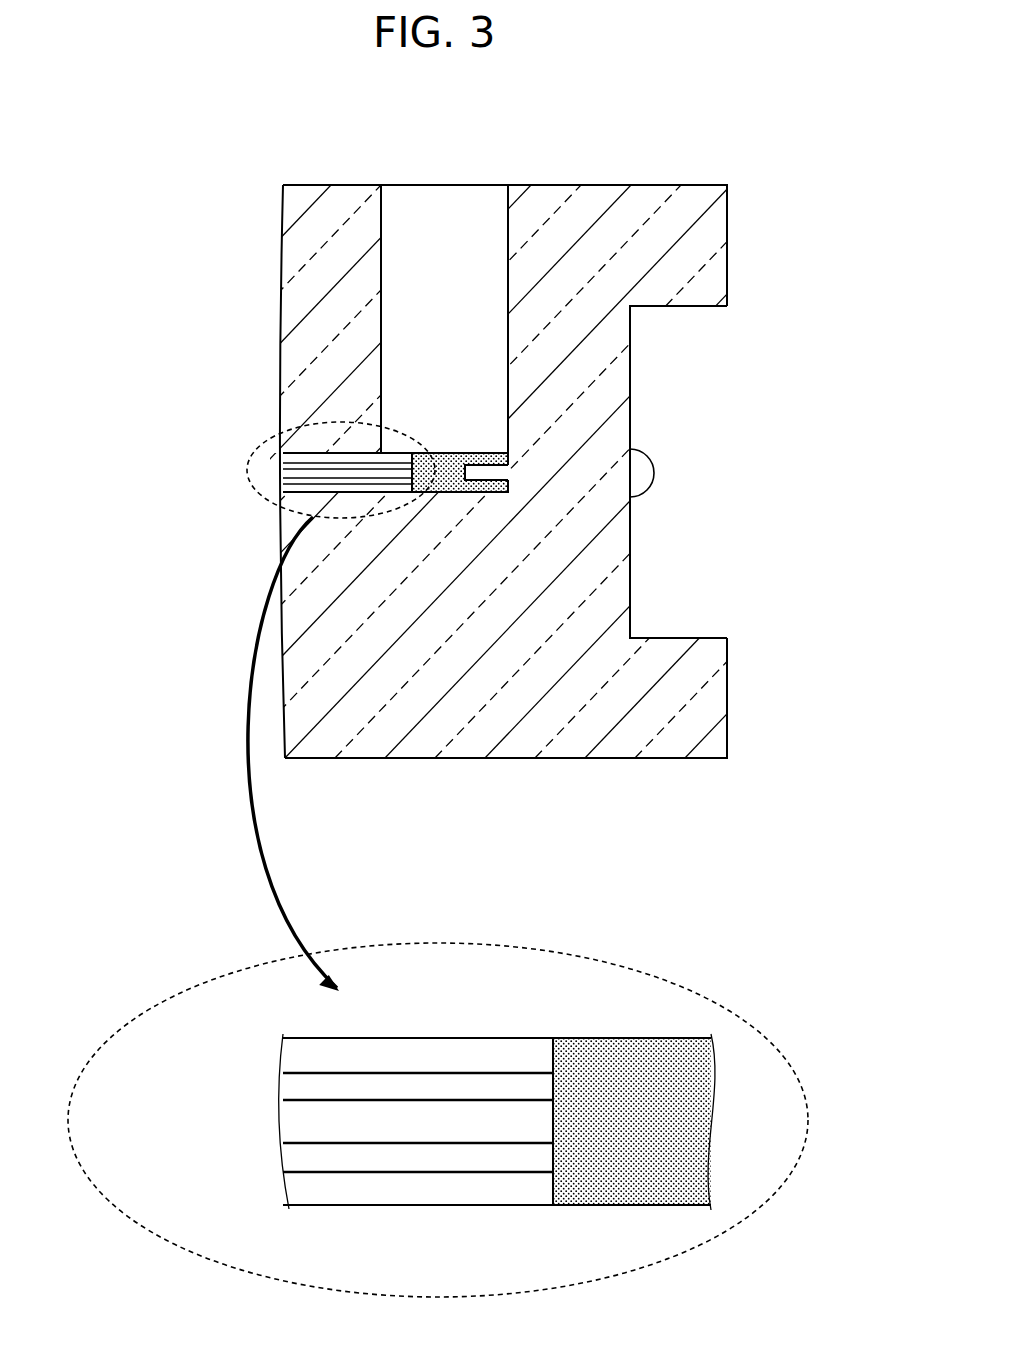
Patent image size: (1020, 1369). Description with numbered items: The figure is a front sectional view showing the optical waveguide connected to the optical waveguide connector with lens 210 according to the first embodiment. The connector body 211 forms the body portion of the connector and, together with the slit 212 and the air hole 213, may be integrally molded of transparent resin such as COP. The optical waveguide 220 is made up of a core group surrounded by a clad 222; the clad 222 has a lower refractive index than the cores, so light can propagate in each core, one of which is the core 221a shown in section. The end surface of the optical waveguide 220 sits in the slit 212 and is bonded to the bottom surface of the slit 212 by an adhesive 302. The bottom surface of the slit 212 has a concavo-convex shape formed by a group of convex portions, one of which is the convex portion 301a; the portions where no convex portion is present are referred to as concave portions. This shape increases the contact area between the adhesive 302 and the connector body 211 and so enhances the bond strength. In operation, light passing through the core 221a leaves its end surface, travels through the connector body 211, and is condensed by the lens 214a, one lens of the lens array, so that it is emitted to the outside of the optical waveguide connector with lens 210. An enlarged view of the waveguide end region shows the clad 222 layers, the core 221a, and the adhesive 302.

The optical waveguide connector with lens 210 is at (617, 96).
The connector body 211 is at (593, 185).
The slit 212 is at (357, 497).
The air hole 213 is at (431, 230).
The lens 214a is at (635, 483).
The optical waveguide 220 is at (185, 1075).
The core 221a is at (303, 1124).
The clad 222 is at (303, 1092).
The convex portion 301a is at (467, 472).
The adhesive 302 is at (457, 478).